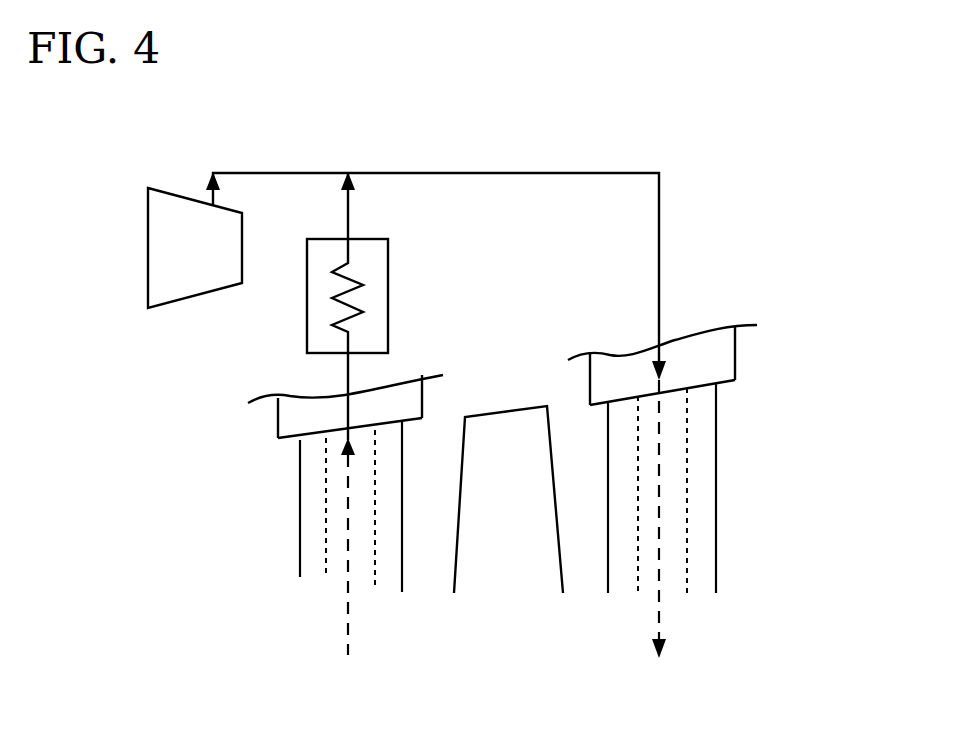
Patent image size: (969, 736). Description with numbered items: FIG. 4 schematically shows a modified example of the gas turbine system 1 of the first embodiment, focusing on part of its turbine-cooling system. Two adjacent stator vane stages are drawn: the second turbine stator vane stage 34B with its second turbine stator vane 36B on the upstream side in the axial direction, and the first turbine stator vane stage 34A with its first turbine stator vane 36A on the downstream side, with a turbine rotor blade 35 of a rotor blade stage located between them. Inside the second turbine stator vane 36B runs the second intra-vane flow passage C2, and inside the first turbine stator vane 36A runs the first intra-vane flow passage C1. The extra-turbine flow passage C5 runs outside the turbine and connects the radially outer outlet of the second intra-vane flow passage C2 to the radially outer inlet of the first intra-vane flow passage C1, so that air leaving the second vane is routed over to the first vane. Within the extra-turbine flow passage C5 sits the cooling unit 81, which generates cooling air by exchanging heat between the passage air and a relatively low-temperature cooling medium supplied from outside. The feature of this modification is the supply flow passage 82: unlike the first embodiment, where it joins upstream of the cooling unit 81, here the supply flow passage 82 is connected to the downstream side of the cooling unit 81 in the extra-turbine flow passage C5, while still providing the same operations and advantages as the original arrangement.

The gas turbine system 1 is at (152, 250).
The supply flow passage 82 is at (434, 236).
The cooling unit 81 is at (307, 328).
The second turbine stator vane stage 34B is at (242, 483).
The second turbine stator vane 36B is at (198, 456).
The first turbine stator vane stage 34A is at (740, 459).
The first turbine stator vane 36A is at (760, 420).
The turbine rotor blade 35 is at (505, 552).
The first intra-vane flow passage C1 is at (700, 510).
The second intra-vane flow passage C2 is at (322, 508).
The extra-turbine flow passage C5 is at (472, 173).